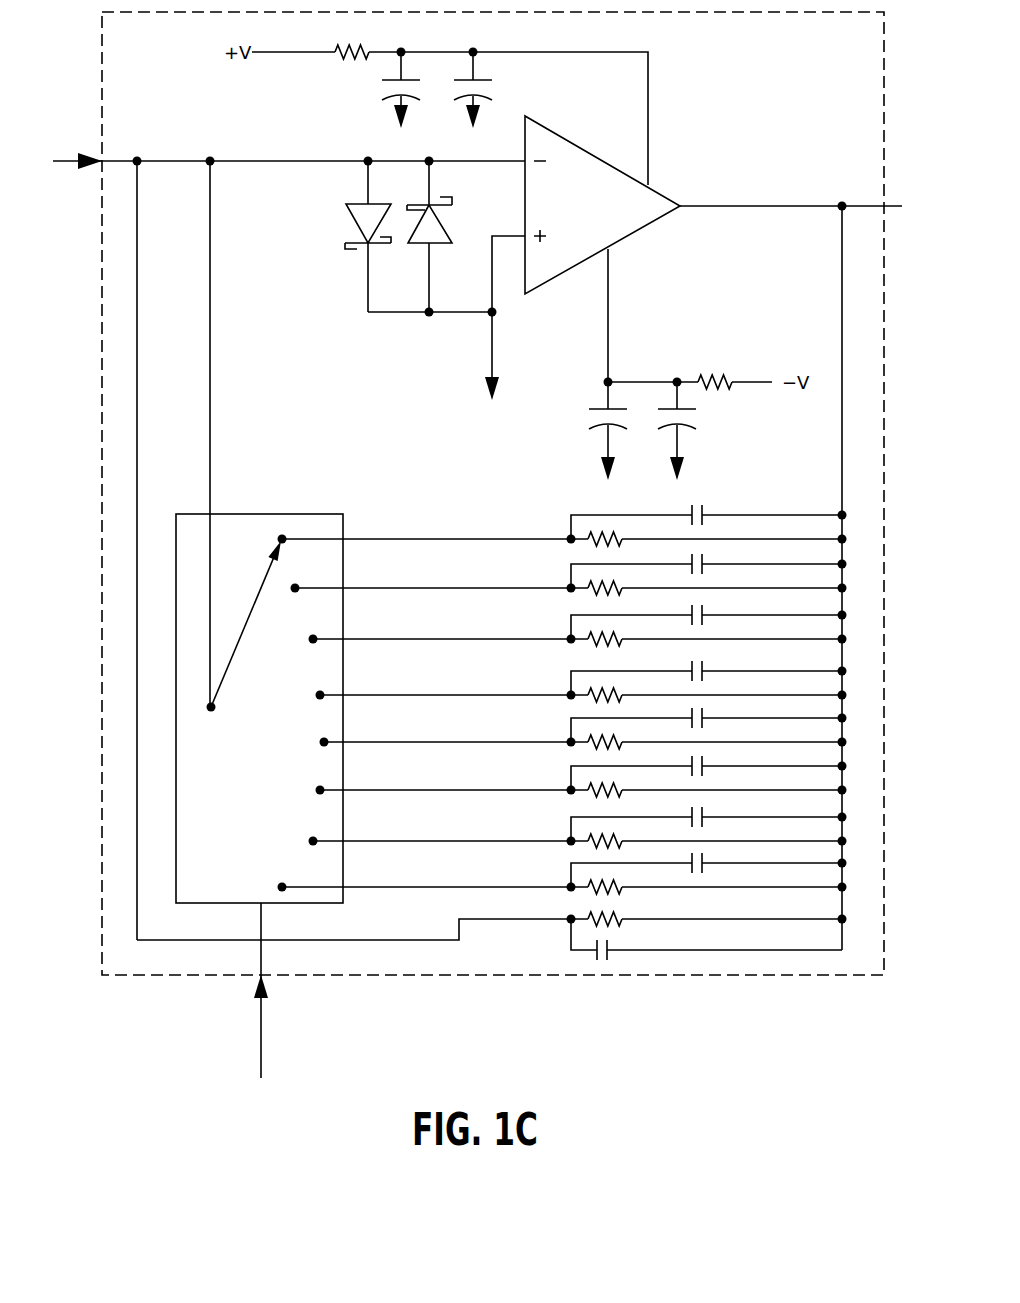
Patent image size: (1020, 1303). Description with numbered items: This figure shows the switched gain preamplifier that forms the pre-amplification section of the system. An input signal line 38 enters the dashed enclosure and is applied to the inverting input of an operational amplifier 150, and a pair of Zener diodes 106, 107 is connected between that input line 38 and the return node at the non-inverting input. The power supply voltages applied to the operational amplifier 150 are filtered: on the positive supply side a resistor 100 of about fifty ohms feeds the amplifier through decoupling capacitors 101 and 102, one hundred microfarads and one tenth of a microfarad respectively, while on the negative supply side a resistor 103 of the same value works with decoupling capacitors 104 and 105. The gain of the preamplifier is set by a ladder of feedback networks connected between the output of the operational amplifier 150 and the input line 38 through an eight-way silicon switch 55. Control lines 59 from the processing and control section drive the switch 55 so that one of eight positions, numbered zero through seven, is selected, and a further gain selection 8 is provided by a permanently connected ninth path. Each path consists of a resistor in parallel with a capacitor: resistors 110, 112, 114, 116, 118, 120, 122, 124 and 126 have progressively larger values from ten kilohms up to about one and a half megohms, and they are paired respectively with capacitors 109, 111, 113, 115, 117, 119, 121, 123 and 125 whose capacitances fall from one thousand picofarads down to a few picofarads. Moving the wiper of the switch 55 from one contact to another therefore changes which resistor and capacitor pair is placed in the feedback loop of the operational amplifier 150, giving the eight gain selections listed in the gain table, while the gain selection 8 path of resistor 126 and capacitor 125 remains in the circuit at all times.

The input signal line 38 is at (285, 154).
The eight-way silicon switch 55 is at (233, 514).
The control lines 59 is at (246, 990).
The gain selection 8 is at (354, 929).
The resistor 100 is at (371, 37).
The decoupling capacitor 101 is at (377, 90).
The decoupling capacitor 102 is at (496, 90).
The resistor 103 is at (716, 366).
The decoupling capacitor 104 is at (577, 431).
The decoupling capacitor 105 is at (704, 431).
The Zener diode 106 is at (344, 236).
The Zener diode 107 is at (450, 236).
The capacitor 109 is at (709, 516).
The resistor 110 is at (707, 532).
The capacitor 111 is at (709, 565).
The resistor 112 is at (707, 581).
The capacitor 113 is at (709, 616).
The resistor 114 is at (707, 632).
The capacitor 115 is at (709, 672).
The resistor 116 is at (707, 688).
The capacitor 117 is at (709, 719).
The resistor 118 is at (707, 735).
The capacitor 119 is at (709, 767).
The resistor 120 is at (707, 783).
The capacitor 121 is at (709, 818).
The resistor 122 is at (707, 834).
The capacitor 123 is at (709, 864).
The resistor 124 is at (707, 880).
The capacitor 125 is at (706, 945).
The resistor 126 is at (707, 931).
The operational amplifier 150 is at (713, 533).